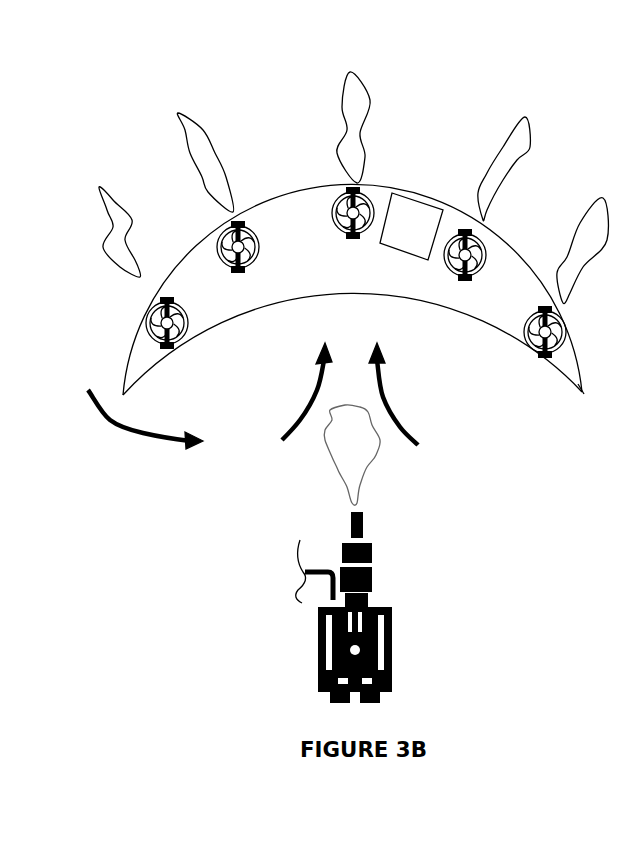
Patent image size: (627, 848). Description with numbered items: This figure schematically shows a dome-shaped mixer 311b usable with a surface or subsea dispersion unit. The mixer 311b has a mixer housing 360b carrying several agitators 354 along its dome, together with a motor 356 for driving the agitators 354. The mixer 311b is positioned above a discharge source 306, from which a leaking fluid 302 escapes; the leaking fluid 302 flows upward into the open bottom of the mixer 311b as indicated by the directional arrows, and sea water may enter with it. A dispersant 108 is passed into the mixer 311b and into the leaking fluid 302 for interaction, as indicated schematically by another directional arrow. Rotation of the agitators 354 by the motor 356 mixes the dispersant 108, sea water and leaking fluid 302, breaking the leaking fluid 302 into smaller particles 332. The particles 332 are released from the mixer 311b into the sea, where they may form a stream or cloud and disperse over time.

The mixer 311b is at (125, 131).
The particles 332 is at (340, 83).
The motor 356 is at (408, 203).
The agitator 354 is at (523, 326).
The dispersant 108 is at (113, 425).
The leaking fluid 302 is at (367, 445).
The discharge source 306 is at (377, 603).
The mixer housing 360b is at (570, 377).